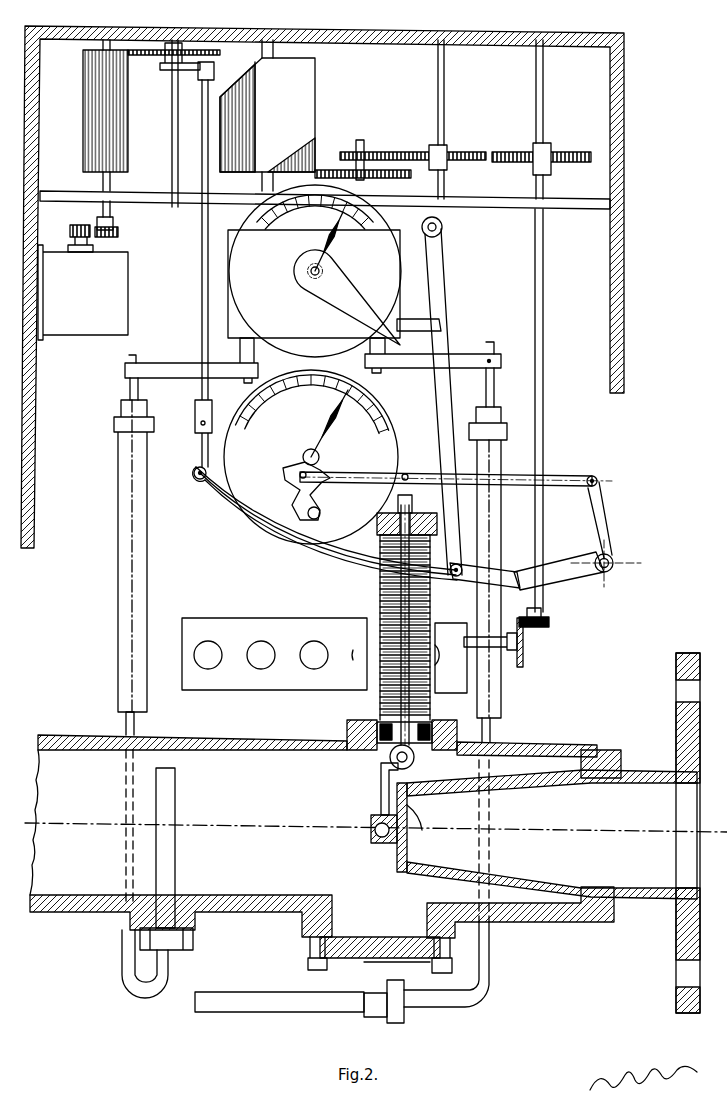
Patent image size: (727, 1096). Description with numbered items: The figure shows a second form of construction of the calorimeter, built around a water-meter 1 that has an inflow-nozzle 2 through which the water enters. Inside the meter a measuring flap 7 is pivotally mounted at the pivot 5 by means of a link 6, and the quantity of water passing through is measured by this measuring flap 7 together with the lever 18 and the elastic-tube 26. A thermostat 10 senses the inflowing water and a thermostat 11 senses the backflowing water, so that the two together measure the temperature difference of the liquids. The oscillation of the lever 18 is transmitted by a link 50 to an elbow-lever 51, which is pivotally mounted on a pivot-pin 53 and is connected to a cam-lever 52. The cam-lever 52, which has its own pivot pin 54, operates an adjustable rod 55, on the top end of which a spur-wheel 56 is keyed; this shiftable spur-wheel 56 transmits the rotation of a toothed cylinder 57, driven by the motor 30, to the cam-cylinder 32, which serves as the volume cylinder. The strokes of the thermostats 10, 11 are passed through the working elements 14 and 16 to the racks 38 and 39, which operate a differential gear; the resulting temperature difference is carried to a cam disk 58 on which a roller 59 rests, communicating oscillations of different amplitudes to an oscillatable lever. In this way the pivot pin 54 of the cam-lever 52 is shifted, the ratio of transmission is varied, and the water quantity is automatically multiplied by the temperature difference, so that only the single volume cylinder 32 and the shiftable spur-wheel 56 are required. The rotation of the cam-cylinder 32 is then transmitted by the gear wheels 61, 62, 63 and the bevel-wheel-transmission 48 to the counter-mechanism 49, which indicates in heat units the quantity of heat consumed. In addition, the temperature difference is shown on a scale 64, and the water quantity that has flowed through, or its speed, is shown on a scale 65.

The water-meter 1 is at (376, 833).
The inflow-nozzle 2 is at (510, 880).
The pivot 5 is at (392, 762).
The link 6 is at (381, 790).
The measuring flap 7 is at (402, 838).
The thermostat for the inflowing water 10 is at (167, 805).
The thermostat for the backflowing water 11 is at (255, 1000).
The working element 14 is at (128, 494).
The working element 16 is at (493, 462).
The lever 18 is at (375, 707).
The elastic-tube 26 is at (380, 595).
The motor 30 is at (112, 275).
The cam-cylinder 32 is at (296, 120).
The rack 38 is at (246, 350).
The rack 39 is at (378, 357).
The bevel-wheel-transmission 48 is at (541, 631).
The counter-mechanism 49 is at (215, 625).
The link 50 is at (424, 477).
The elbow-lever 51 is at (595, 507).
The cam-lever 52 is at (218, 496).
The pivot-pin 53 is at (614, 563).
The pivot pin 54 is at (456, 577).
The adjustable rod 55 is at (204, 308).
The spur-wheel 56 is at (196, 58).
The toothed cylinder 57 is at (118, 118).
The cam disk 58 is at (343, 262).
The roller 59 is at (398, 318).
The gear wheel 61 is at (374, 168).
The gear wheel 62 is at (458, 152).
The gear wheel 63 is at (553, 155).
The scale 64 is at (380, 220).
The scale 65 is at (375, 408).